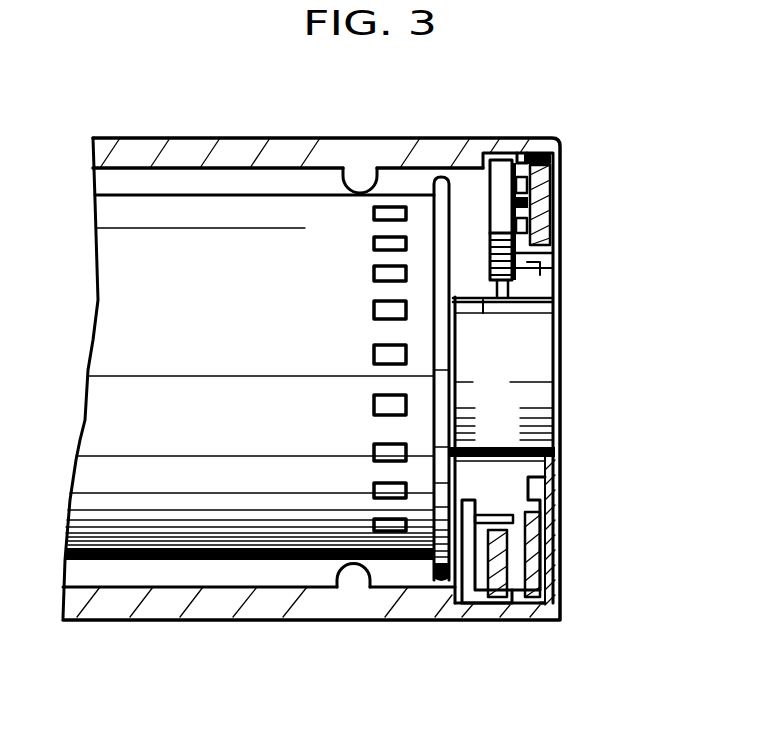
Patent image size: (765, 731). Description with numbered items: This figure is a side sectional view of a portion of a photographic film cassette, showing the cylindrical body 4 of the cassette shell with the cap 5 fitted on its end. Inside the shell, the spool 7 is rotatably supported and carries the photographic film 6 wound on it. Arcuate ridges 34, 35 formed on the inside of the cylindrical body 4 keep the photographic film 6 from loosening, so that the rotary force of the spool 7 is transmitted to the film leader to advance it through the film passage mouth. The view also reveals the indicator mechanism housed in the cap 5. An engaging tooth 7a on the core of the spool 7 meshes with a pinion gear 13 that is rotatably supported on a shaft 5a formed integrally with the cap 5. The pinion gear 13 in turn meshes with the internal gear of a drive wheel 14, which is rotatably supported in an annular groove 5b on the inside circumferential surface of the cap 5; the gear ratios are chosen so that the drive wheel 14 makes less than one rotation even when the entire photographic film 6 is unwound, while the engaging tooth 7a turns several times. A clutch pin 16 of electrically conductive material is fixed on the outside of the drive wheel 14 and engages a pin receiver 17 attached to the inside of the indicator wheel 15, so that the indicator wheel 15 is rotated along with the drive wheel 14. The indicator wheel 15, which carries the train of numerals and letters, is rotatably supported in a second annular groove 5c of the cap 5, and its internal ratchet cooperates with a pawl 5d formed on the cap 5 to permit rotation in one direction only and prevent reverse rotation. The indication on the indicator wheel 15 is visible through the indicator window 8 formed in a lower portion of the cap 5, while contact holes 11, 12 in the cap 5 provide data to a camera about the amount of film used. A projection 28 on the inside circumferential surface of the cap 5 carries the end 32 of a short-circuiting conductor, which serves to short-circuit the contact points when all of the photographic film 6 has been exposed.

The cylindrical body 4 is at (200, 137).
The cap 5 is at (493, 622).
The shaft 5a is at (558, 278).
The annular groove 5b is at (497, 160).
The annular groove 5c is at (532, 155).
The pawl 5d is at (560, 507).
The photographic film 6 is at (148, 565).
The spool 7 is at (562, 403).
The engaging tooth 7a is at (483, 302).
The indicator window 8 is at (557, 562).
The contact hole 11 is at (562, 182).
The contact hole 12 is at (558, 235).
The pinion gear 13 is at (510, 296).
The drive wheel 14 is at (497, 205).
The indicator wheel 15 is at (527, 600).
The clutch pin 16 is at (545, 206).
The pin receiver 17 is at (548, 155).
The projection 28 is at (444, 568).
The end of short-circuiting conductor 32 is at (490, 515).
The arcuate ridge 34 is at (363, 150).
The arcuate ridge 35 is at (355, 590).